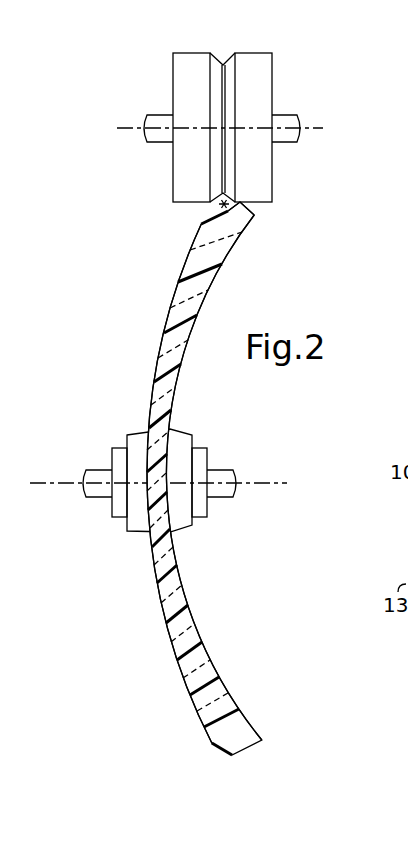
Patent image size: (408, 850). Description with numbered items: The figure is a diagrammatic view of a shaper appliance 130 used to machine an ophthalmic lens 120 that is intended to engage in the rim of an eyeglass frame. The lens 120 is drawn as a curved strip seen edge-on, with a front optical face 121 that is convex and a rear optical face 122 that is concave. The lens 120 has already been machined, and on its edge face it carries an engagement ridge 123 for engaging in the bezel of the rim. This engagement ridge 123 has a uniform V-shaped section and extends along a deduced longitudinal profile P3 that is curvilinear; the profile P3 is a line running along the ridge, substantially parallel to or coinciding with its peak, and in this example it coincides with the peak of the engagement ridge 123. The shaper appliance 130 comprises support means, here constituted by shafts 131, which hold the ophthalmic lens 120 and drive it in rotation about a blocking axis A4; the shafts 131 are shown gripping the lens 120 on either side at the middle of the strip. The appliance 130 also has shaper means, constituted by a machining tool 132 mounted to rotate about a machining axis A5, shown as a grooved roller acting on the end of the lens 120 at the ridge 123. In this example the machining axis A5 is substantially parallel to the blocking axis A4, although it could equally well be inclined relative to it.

The machining tool 132 is at (282, 88).
The machining axis A5 is at (317, 128).
The shafts 131 is at (89, 470).
The blocking axis A4 is at (280, 483).
The shaper appliance 130 is at (127, 330).
The ophthalmic lens 120 is at (169, 688).
The front optical face 121 is at (158, 590).
The rear optical face 122 is at (189, 608).
The engagement ridge 123 is at (241, 203).
The deduced longitudinal profile P3 is at (223, 203).